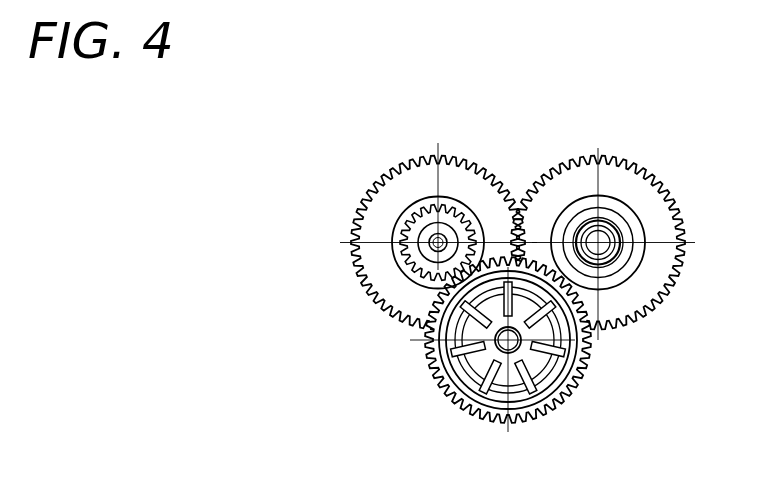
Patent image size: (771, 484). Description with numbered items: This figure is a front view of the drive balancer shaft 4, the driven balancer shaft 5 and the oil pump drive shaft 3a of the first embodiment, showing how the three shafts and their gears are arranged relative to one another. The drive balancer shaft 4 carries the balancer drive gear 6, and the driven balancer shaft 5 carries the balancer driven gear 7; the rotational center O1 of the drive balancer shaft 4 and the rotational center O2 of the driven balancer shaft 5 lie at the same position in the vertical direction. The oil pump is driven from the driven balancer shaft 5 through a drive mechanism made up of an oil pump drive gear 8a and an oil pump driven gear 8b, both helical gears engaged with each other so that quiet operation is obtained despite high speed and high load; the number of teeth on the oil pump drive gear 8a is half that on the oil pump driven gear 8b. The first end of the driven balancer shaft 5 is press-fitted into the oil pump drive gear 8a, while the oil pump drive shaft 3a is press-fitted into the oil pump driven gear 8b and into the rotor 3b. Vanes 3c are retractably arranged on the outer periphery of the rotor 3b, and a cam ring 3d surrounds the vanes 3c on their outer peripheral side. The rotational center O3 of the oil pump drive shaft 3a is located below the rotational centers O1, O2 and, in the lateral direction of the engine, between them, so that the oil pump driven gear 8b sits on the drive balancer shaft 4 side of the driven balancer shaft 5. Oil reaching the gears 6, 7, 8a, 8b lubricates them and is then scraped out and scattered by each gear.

The oil pump drive shaft 3a is at (557, 375).
The rotor 3b is at (457, 377).
The vanes 3c is at (460, 352).
The cam ring 3d is at (555, 387).
The drive balancer shaft 4 is at (617, 228).
The driven balancer shaft 5 is at (395, 235).
The balancer drive gear 6 is at (650, 180).
The balancer driven gear 7 is at (385, 177).
The oil pump drive gear 8a is at (462, 202).
The oil pump driven gear 8b is at (590, 355).
The rotational center of the drive balancer shaft O1 is at (603, 247).
The rotational center of the driven balancer shaft O2 is at (433, 249).
The rotational center of the oil pump drive shaft O3 is at (500, 352).